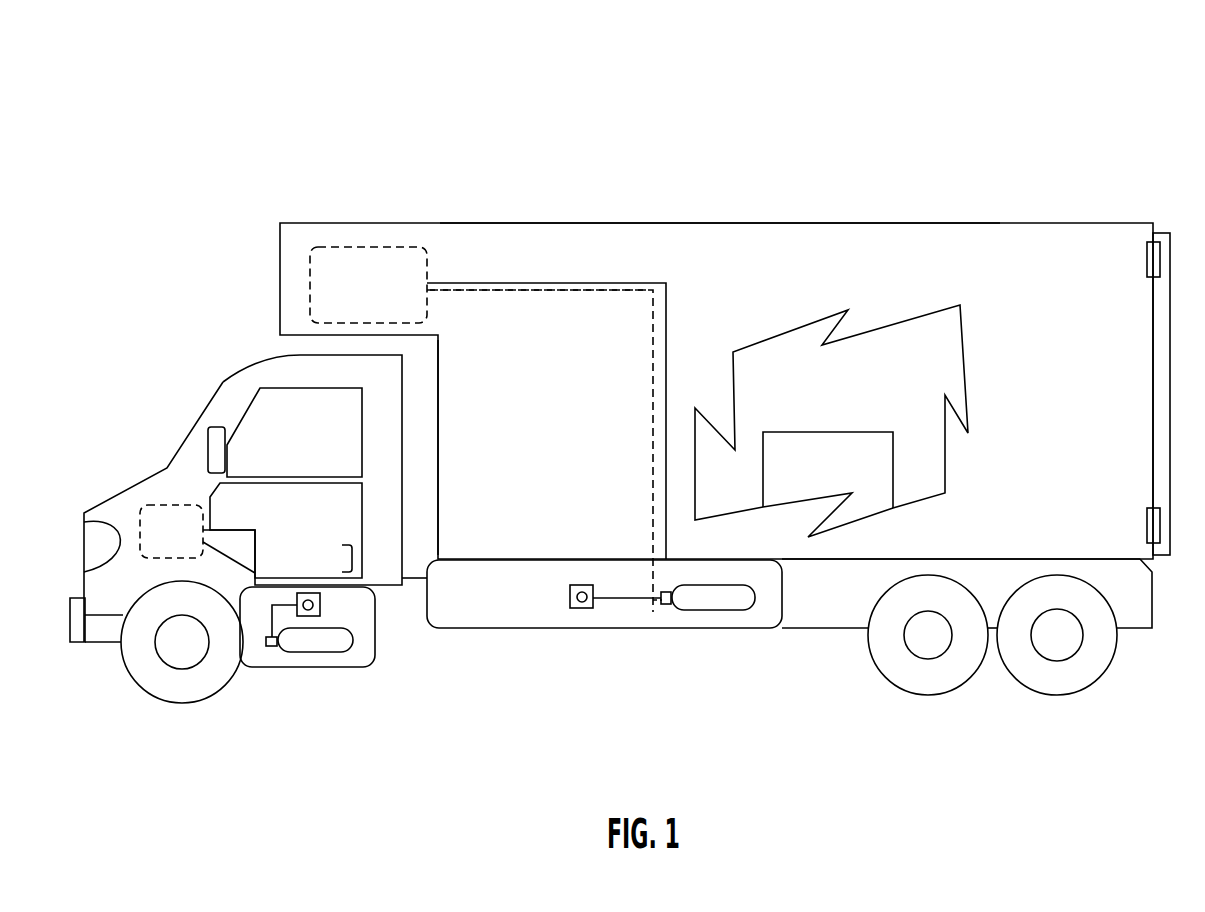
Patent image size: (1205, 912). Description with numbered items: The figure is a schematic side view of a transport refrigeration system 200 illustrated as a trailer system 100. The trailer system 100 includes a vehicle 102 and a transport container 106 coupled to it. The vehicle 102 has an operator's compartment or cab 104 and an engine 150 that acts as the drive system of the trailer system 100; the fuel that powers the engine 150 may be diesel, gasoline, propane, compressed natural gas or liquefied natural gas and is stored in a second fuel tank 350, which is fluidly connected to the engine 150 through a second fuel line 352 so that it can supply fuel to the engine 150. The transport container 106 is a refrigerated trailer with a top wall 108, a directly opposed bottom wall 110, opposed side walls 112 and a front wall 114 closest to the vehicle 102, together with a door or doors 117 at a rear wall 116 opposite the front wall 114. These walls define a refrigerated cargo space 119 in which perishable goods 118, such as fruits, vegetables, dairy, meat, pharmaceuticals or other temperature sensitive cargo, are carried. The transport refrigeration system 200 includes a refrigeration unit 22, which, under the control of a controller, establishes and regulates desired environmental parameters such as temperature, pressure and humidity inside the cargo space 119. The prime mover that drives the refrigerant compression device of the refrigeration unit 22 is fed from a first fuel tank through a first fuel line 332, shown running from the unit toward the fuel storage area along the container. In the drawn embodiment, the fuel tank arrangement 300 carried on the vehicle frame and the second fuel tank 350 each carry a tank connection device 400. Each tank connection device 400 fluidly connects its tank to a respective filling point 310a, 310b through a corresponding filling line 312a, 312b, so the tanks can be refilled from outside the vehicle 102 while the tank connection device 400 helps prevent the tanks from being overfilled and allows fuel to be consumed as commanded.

The trailer system 100 is at (290, 98).
The transport refrigeration system 200 is at (427, 183).
The vehicle 102 is at (95, 648).
The cab 104 is at (260, 428).
The transport container 106 is at (850, 245).
The top wall 108 is at (657, 223).
The bottom wall 110 is at (950, 558).
The side walls 112 is at (742, 292).
The front wall 114 is at (438, 415).
The rear wall 116 is at (1152, 325).
The door 117 is at (1158, 403).
The perishable goods 118 is at (763, 470).
The refrigerated cargo space 119 is at (935, 355).
The engine 150 is at (163, 503).
The refrigeration unit 22 is at (338, 247).
The first fuel line 332 is at (572, 283).
The second fuel line 352 is at (258, 534).
The fuel tank 300 is at (740, 602).
The filling point 310a is at (582, 585).
The filling point 310b is at (320, 603).
The filling line 312a is at (603, 600).
The filling line 312b is at (265, 640).
The second fuel tank 350 is at (327, 643).
The tank connection device 400 is at (672, 605).